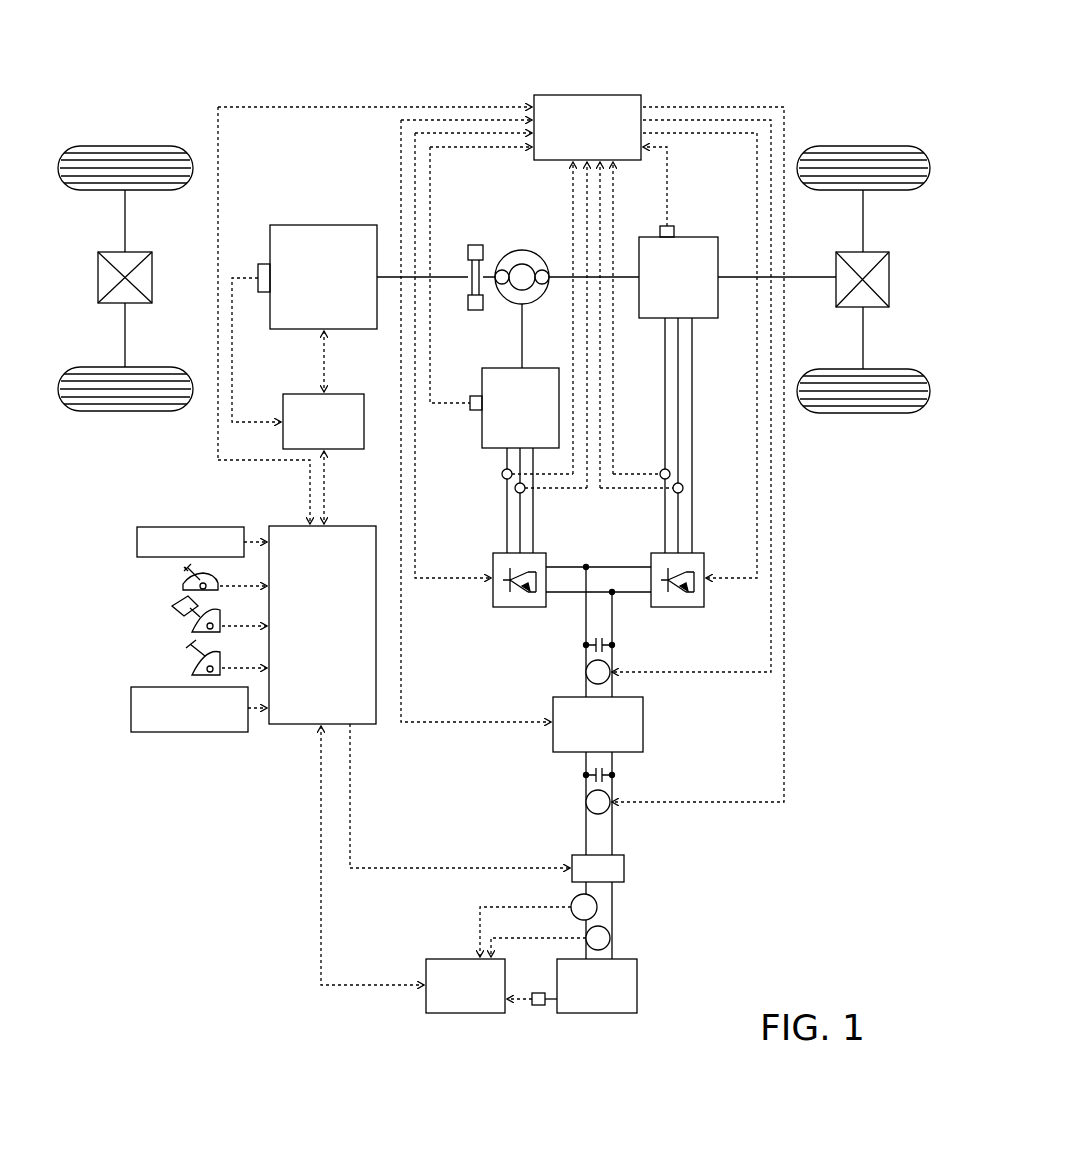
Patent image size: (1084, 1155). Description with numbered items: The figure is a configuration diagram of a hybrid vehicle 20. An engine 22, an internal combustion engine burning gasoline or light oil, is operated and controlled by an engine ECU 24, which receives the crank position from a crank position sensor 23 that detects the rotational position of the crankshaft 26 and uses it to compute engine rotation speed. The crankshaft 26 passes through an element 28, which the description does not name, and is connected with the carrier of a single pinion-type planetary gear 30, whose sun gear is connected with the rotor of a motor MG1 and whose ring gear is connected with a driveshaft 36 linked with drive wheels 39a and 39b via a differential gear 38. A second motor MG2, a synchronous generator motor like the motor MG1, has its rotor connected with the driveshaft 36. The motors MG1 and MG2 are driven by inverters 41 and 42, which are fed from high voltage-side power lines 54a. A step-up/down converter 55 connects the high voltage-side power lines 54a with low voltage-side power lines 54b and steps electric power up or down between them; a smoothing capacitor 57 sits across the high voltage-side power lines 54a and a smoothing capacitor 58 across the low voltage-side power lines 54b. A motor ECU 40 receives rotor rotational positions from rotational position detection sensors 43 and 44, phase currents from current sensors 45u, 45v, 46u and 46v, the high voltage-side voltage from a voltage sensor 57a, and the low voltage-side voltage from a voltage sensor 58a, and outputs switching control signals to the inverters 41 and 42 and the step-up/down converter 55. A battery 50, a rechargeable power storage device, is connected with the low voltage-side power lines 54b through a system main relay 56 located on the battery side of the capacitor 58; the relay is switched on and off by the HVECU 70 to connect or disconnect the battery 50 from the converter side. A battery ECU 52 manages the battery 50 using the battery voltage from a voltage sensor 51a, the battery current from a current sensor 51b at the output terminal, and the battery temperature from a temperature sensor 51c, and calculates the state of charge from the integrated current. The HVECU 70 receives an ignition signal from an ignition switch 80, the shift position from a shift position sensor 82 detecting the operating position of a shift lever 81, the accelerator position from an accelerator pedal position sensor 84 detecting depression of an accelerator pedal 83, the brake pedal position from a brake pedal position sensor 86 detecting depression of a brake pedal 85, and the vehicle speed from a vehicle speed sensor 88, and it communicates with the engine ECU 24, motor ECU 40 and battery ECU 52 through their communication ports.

The hybrid vehicle 20 is at (719, 58).
The engine 22 is at (325, 224).
The crank position sensor 23 is at (262, 262).
The engine ECU 24 is at (350, 393).
The crankshaft 26 is at (452, 275).
The damper 28 is at (474, 244).
The planetary gear 30 is at (520, 249).
The driveshaft 36 is at (798, 276).
The differential gear 38 is at (871, 251).
The drive wheel 39a is at (857, 145).
The drive wheel 39b is at (857, 414).
The motor ECU 40 is at (588, 93).
The inverter 41 is at (538, 552).
The inverter 42 is at (696, 552).
The rotational position detection sensor 43 is at (475, 411).
The rotational position detection sensor 44 is at (669, 225).
The current sensor 45u is at (502, 474).
The current sensor 45v is at (515, 488).
The current sensor 46u is at (670, 474).
The current sensor 46v is at (683, 488).
The battery 50 is at (639, 986).
The voltage sensor 51a is at (610, 938).
The current sensor 51b is at (597, 907).
The temperature sensor 51c is at (538, 1006).
The battery ECU 52 is at (458, 958).
The high voltage-side power lines 54a is at (586, 623).
The low voltage-side power lines 54b is at (586, 826).
The step-up/down converter 55 is at (645, 722).
The system main relay 56 is at (626, 868).
The smoothing capacitor 57 is at (614, 645).
The voltage sensor 57a is at (586, 672).
The smoothing capacitor 58 is at (614, 775).
The voltage sensor 58a is at (586, 802).
The HVECU 70 is at (345, 524).
The ignition switch 80 is at (136, 542).
The shift lever 81 is at (190, 572).
The shift position sensor 82 is at (182, 585).
The accelerator pedal 83 is at (172, 610).
The accelerator pedal position sensor 84 is at (192, 628).
The brake pedal 85 is at (188, 650).
The brake pedal position sensor 86 is at (192, 670).
The vehicle speed sensor 88 is at (130, 708).
The motor MG1 is at (497, 367).
The motor MG2 is at (702, 236).